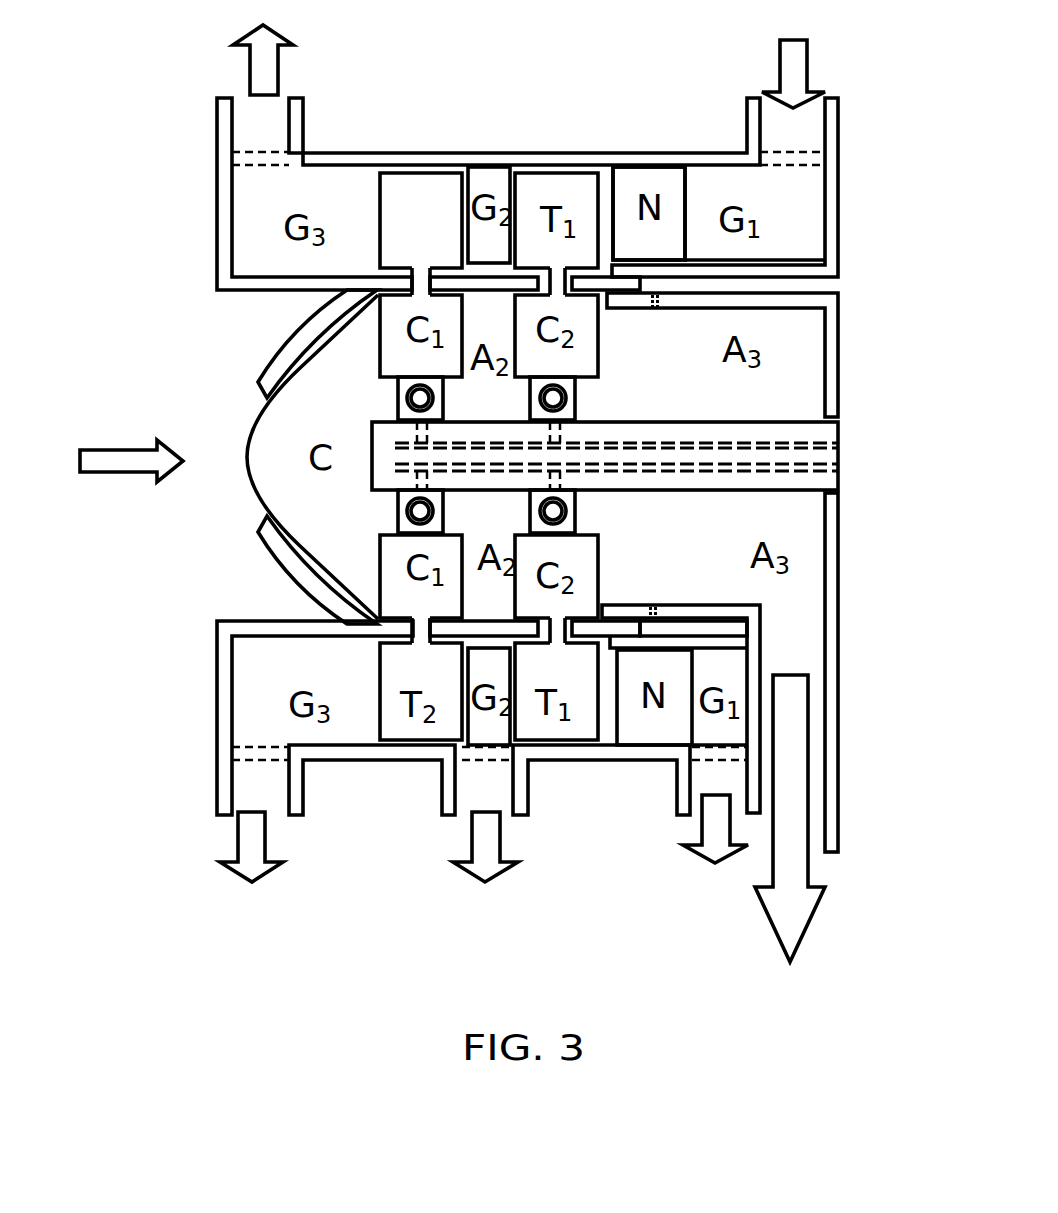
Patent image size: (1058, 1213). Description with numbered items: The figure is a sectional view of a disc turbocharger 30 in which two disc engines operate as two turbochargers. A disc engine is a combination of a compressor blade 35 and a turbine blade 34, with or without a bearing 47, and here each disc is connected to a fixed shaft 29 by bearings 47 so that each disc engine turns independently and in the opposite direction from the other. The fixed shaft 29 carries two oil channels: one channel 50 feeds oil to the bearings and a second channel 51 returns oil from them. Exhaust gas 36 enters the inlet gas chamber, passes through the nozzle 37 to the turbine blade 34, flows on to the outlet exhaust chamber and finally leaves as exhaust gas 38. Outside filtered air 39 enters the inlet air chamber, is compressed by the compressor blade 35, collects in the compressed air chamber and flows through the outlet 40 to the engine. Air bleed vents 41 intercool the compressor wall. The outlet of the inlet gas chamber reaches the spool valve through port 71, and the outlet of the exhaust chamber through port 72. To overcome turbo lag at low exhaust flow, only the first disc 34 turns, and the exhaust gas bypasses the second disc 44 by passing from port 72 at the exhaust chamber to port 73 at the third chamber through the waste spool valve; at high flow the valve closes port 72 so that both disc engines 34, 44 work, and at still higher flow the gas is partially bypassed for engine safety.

The fixed shaft 29 is at (838, 477).
The disc turbocharger 30 is at (800, 154).
The turbine blade 34 is at (400, 173).
The compressor blade 35 is at (378, 350).
The exhaust gas 36 is at (810, 52).
The nozzle 37 is at (648, 165).
The exhaust gas 38 is at (280, 80).
The outside filtered air 39 is at (117, 450).
The outlet 40 is at (795, 953).
The air bleed vents 41 is at (648, 555).
The second disc 44 is at (575, 172).
The bearing 47 is at (572, 406).
The oil channel 50 is at (868, 403).
The oil channel 51 is at (838, 468).
The port 71 is at (698, 850).
The port 72 is at (500, 852).
The port 73 is at (267, 852).